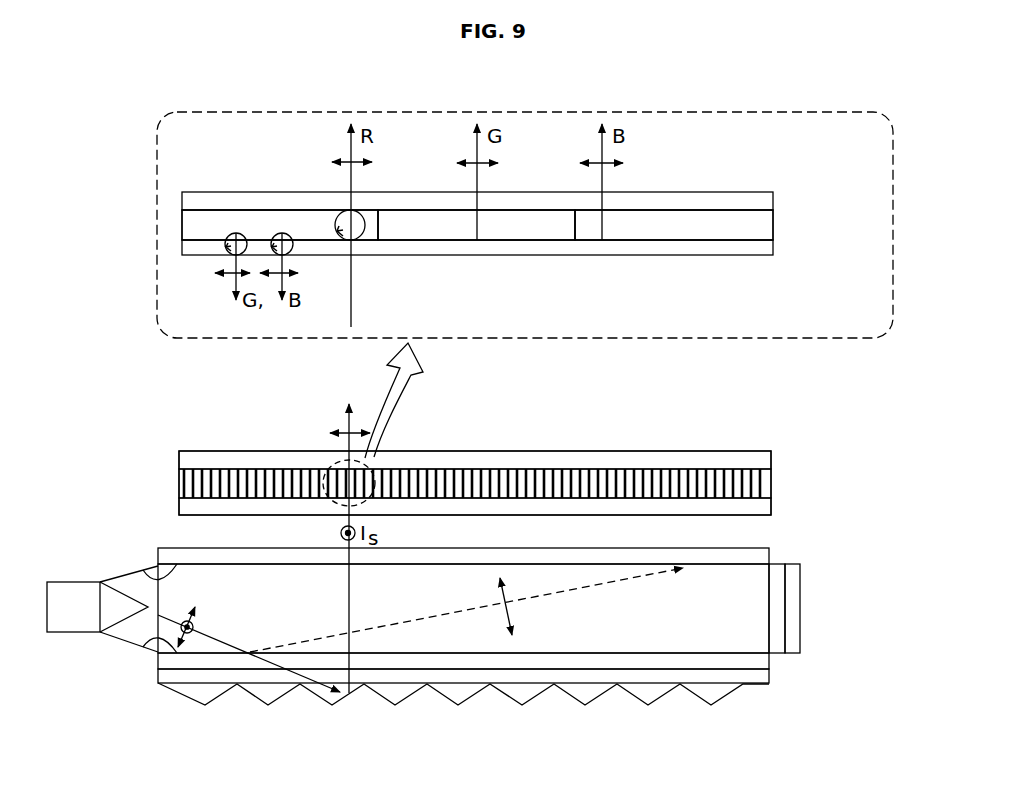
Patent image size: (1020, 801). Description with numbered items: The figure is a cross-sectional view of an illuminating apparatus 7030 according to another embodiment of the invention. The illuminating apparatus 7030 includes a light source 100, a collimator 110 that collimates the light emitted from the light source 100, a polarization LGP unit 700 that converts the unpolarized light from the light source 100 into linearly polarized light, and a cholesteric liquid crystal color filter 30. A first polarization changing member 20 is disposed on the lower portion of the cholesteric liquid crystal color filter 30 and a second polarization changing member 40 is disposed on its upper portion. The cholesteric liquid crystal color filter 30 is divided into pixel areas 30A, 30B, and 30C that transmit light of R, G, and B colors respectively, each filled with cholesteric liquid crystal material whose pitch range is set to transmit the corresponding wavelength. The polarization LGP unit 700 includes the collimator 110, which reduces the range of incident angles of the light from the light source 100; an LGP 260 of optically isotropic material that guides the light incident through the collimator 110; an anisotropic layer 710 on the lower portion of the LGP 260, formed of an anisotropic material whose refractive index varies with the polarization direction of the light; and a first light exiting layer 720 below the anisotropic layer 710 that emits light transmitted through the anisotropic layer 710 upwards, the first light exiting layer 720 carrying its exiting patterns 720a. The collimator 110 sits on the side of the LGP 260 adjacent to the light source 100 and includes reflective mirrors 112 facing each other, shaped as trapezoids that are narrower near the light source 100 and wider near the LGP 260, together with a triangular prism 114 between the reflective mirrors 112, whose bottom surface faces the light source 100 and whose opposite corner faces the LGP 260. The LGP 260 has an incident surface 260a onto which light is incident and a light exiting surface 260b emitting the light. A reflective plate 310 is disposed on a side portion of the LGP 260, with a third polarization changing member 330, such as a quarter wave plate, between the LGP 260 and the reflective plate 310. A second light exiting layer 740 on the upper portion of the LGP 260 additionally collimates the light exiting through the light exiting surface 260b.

The illuminating apparatus 7030 is at (792, 426).
The second polarization changing member 40 is at (762, 200).
The cholesteric liquid crystal color filter 30 is at (778, 225).
The pixel area 30A is at (223, 233).
The pixel area 30B is at (445, 233).
The pixel area 30C is at (710, 236).
The first polarization changing member 20 is at (763, 252).
The polarization LGP unit 700 is at (484, 634).
The second light exiting layer 740 is at (755, 560).
The reflective plate 310 is at (793, 577).
The third polarization changing member 330 is at (780, 597).
The LGP 260 is at (755, 627).
The anisotropic layer 710 is at (760, 665).
The first light exiting layer 720 is at (509, 707).
The prism 720a is at (638, 690).
The incident surface 260a is at (167, 667).
The light exiting surface 260b is at (137, 572).
The collimator 110 is at (104, 584).
The light source 100 is at (72, 622).
The triangular prism 114 is at (110, 618).
The reflective mirrors 112 is at (138, 572).